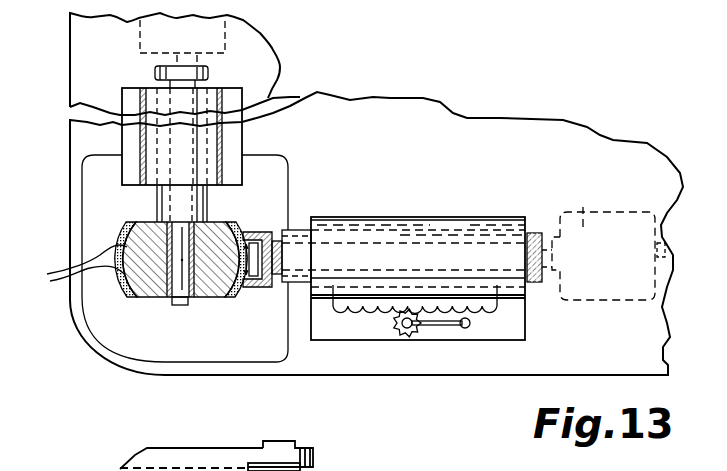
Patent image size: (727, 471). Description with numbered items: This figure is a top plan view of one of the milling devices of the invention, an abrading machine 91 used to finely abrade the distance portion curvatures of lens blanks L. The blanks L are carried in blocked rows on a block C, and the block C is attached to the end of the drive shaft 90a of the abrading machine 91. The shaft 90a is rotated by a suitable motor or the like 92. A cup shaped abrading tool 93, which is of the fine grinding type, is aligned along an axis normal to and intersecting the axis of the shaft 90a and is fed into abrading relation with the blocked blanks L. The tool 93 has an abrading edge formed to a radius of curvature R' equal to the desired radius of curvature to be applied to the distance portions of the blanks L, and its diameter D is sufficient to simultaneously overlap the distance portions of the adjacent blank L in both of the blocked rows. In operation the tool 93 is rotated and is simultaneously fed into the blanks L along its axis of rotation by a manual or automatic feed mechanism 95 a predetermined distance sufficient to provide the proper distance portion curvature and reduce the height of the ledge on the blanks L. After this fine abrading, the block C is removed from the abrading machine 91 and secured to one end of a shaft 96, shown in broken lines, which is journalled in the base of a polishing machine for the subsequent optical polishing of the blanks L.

The abrading machine 91 is at (95, 343).
The motor 92 is at (140, 40).
The drive shaft 90a is at (172, 193).
The lens blanks L is at (75, 269).
The block C is at (155, 296).
The radius of curvature R' is at (181, 286).
The diameter D is at (256, 288).
The cup shaped abrading tool 93 is at (274, 231).
The feed mechanism 95 is at (400, 312).
The shaft 96 is at (583, 207).